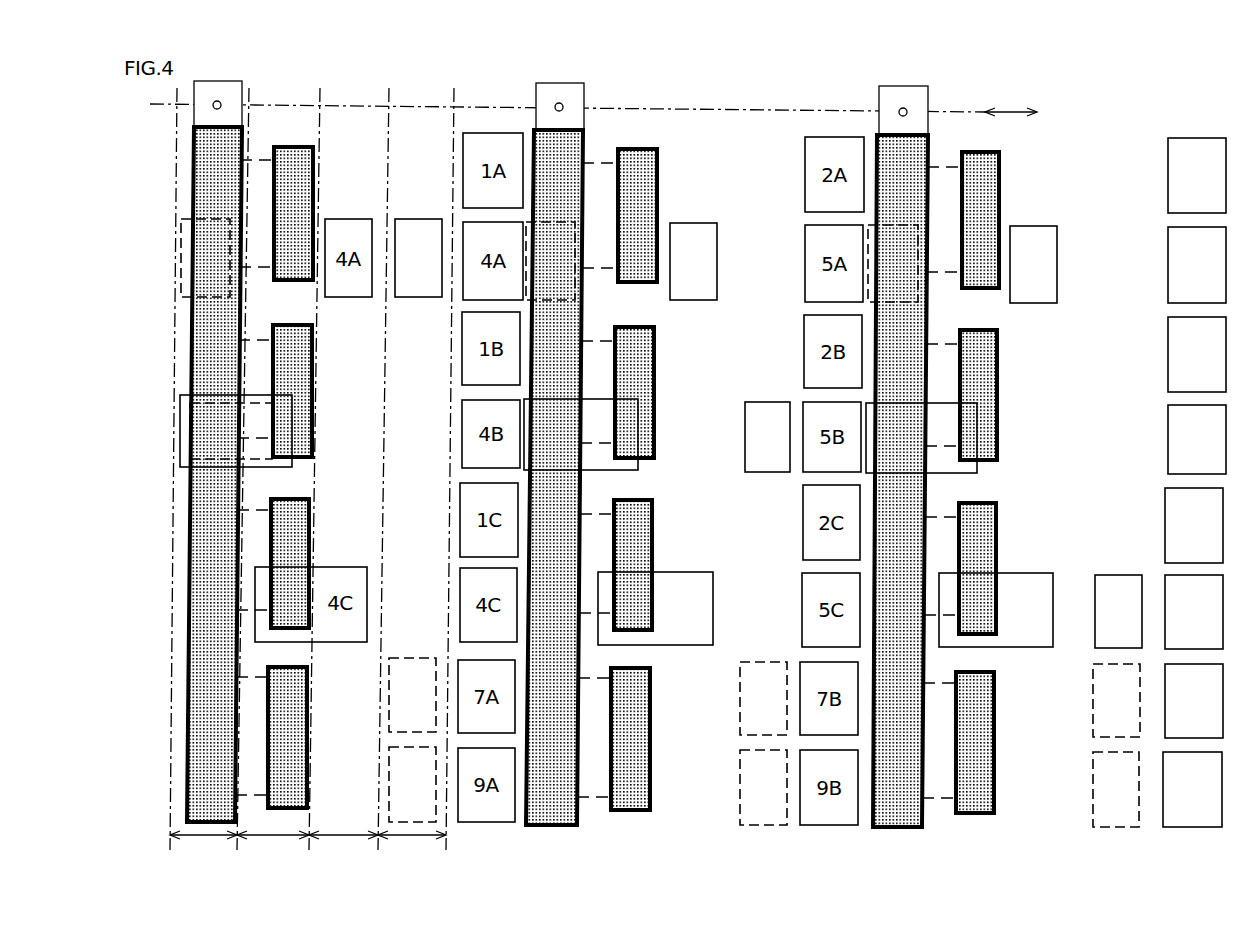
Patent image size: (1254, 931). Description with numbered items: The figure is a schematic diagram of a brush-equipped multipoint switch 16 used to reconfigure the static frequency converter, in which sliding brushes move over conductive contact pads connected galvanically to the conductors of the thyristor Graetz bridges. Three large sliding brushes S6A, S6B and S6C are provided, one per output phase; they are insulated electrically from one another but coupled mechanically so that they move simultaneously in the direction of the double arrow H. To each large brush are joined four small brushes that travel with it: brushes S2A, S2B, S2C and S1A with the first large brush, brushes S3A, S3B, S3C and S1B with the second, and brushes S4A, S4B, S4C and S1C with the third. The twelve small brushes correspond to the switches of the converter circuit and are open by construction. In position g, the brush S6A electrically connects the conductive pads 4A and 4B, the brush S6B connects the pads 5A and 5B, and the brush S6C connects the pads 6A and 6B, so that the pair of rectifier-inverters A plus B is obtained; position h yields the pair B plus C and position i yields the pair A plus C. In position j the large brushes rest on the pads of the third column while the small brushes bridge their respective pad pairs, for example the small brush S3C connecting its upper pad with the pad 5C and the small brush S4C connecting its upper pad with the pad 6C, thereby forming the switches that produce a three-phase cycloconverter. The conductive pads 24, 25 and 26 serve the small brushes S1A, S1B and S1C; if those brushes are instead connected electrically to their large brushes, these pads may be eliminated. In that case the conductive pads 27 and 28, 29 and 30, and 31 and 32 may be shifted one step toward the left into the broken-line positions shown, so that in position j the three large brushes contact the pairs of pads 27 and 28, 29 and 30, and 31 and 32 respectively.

The printing station layout 16 is at (1163, 100).
The large sliding brush S6A is at (200, 147).
The large sliding brush S6B is at (571, 145).
The large sliding brush S6C is at (920, 147).
The small brush S2A is at (292, 160).
The small brush S2B is at (297, 353).
The small brush S2C is at (297, 528).
The small brush S1A is at (290, 704).
The small brush S1B is at (637, 702).
The small brush S1C is at (980, 705).
The small brush S3A is at (645, 172).
The small brush S3B is at (645, 358).
The small brush S3C is at (640, 530).
The small brush S4A is at (990, 183).
The small brush S4B is at (988, 358).
The small brush S4C is at (985, 530).
The conductive contact pad 4A is at (190, 257).
The conductive contact pad 4B is at (185, 437).
The conductive contact pad 5A is at (565, 280).
The conductive contact pad 5B is at (581, 434).
The conductive contact pad 5C is at (655, 608).
The conductive contact pad 6A is at (910, 280).
The conductive contact pad 6B is at (921, 438).
The conductive contact pad 6C is at (996, 610).
The conductive pad 24 is at (416, 298).
The conductive pad 25 is at (745, 432).
The conductive pad 26 is at (1115, 575).
The conductive pad 27 is at (427, 656).
The conductive pad 28 is at (433, 800).
The conductive pad 29 is at (773, 661).
The conductive pad 30 is at (786, 804).
The conductive pad 31 is at (1165, 671).
The conductive pad 32 is at (1140, 806).
The double arrow H is at (1012, 110).
The position g is at (190, 835).
The position h is at (276, 823).
The position i is at (345, 823).
The position j is at (392, 836).